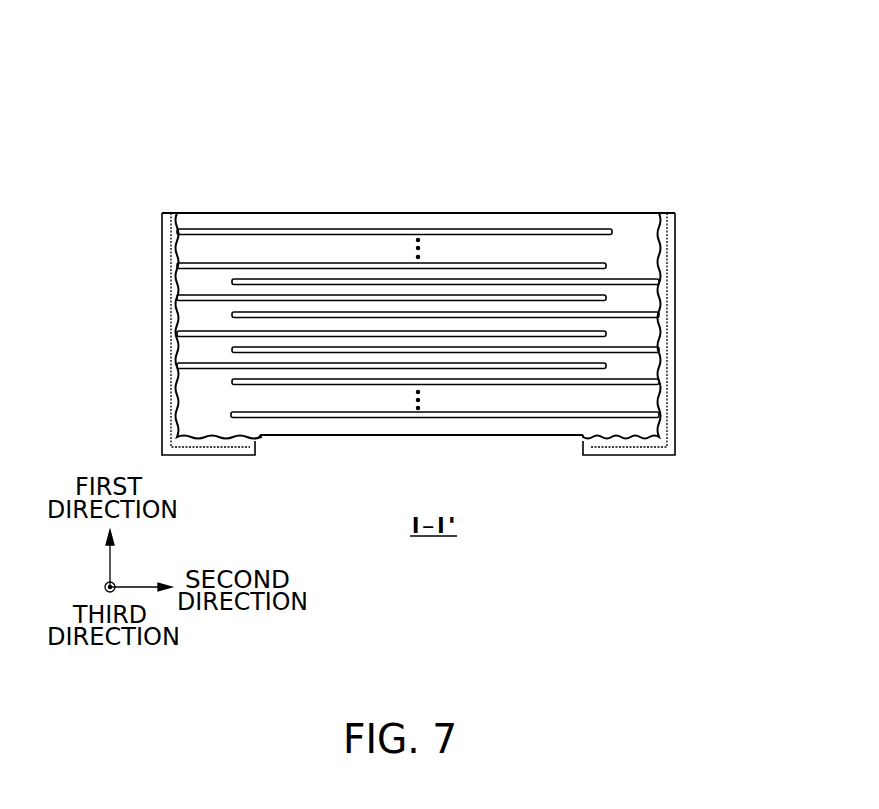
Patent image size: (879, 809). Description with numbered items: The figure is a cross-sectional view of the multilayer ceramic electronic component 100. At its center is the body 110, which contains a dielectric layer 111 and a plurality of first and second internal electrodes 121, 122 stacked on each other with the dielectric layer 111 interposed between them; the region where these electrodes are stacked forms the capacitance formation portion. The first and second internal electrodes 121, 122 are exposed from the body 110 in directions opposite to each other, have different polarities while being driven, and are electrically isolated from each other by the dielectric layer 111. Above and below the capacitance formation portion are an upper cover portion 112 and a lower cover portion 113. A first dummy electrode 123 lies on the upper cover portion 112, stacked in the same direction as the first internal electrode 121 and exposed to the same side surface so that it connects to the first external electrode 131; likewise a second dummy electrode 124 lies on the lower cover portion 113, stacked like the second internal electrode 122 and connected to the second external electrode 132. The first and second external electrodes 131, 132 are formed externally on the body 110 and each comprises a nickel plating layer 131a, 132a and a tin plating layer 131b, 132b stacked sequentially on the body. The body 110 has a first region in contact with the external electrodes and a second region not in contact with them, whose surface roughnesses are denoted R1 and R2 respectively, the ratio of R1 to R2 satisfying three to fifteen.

The multilayer ceramic electronic component 100 is at (110, 43).
The body 110 is at (458, 212).
The dielectric layer 111 is at (347, 277).
The upper cover portion 112 is at (514, 222).
The lower cover portion 113 is at (543, 428).
The first internal electrode 121 is at (292, 263).
The second internal electrode 122 is at (398, 283).
The first dummy electrode 123 is at (241, 232).
The second dummy electrode 124 is at (493, 417).
The first external electrode 131 is at (73, 283).
The nickel plating layer 131a is at (168, 332).
The tin plating layer 131b is at (162, 303).
The second external electrode 132 is at (765, 288).
The nickel plating layer 132a is at (663, 332).
The tin plating layer 132b is at (673, 300).
The surface roughness of the first region R1 is at (263, 436).
The surface roughness of the second region R2 is at (422, 436).